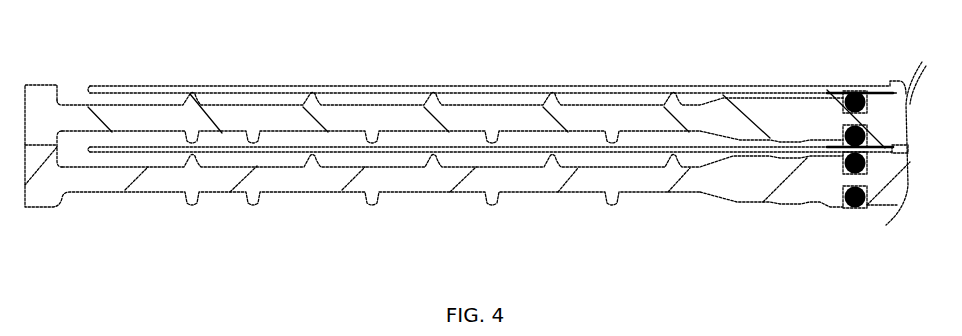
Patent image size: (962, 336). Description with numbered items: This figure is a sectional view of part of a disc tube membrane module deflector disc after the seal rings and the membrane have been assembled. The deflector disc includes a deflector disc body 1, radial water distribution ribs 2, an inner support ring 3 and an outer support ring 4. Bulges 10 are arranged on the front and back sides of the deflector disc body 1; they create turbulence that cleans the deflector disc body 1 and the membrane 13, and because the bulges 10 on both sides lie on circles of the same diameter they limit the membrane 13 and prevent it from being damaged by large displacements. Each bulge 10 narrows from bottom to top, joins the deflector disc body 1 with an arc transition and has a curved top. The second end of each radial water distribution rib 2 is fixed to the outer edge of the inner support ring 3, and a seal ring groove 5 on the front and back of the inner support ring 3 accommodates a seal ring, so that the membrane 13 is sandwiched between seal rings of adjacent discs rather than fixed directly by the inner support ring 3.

The deflector disc body 1 is at (543, 181).
The radial water distribution rib 2 is at (747, 182).
The inner support ring 3 is at (885, 110).
The outer support ring 4 is at (45, 185).
The seal ring groove 5 is at (845, 202).
The bulge 10 is at (192, 198).
The membrane 13 is at (715, 88).